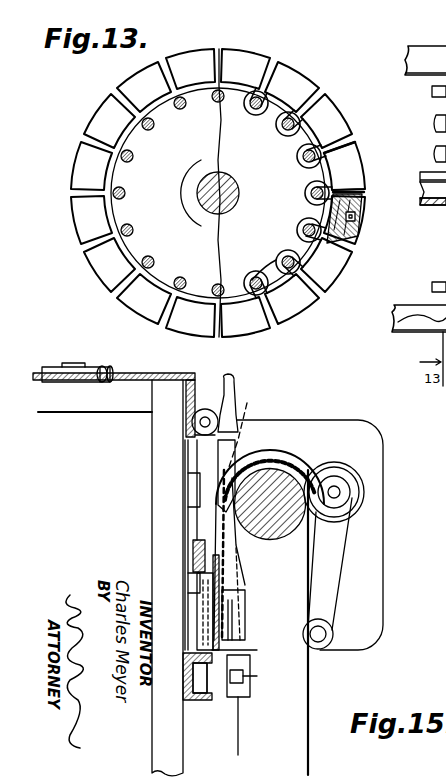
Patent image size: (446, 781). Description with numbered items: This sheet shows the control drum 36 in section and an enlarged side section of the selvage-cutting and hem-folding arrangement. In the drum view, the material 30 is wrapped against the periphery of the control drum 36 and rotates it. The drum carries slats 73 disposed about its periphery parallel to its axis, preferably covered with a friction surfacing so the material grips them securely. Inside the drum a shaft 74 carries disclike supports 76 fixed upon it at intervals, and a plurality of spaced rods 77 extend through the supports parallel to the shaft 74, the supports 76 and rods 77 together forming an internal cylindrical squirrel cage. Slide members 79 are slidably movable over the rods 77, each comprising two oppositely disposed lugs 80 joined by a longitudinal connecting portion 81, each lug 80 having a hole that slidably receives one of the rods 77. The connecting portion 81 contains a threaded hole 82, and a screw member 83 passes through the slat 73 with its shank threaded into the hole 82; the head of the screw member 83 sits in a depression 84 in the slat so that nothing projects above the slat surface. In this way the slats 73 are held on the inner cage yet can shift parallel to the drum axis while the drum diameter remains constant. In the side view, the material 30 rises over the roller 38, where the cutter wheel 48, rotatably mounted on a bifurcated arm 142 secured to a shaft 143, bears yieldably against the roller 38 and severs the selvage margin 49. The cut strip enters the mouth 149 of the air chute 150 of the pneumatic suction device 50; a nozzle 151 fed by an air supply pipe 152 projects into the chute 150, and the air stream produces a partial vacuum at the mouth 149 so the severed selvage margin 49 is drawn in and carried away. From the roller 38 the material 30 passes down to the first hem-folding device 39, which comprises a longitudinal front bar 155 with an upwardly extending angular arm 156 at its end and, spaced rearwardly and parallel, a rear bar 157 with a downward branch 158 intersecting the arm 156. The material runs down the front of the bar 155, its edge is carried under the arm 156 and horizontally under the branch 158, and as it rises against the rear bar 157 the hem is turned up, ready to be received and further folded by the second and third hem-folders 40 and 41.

In FIG. 13, the control drum 36 is at (302, 66).
In FIG. 13, the slats 73 is at (232, 60).
In FIG. 13, the shaft 74 is at (197, 214).
In FIG. 13, the disclike supports 76 is at (278, 150).
In FIG. 13, the rods 77 is at (262, 284).
In FIG. 13, the slide members 79 is at (304, 214).
In FIG. 13, the lugs 80 is at (300, 255).
In FIG. 13, the connecting portion 81 is at (340, 141).
In FIG. 13, the threaded hole 82 is at (348, 172).
In FIG. 13, the screw member 83 is at (356, 217).
In FIG. 13, the depression 84 is at (356, 193).
In FIG. 15, the material 30 is at (200, 375).
In FIG. 15, the roller 38 is at (284, 540).
In FIG. 15, the first hem-folding device 39 is at (192, 636).
In FIG. 15, the second hem-folder 40 is at (192, 452).
In FIG. 15, the third hem-folder 41 is at (90, 371).
In FIG. 15, the cutter wheel 48 is at (350, 490).
In FIG. 15, the selvage margin 49 is at (292, 462).
In FIG. 15, the pneumatic suction device 50 is at (272, 450).
In FIG. 15, the bifurcated arm 142 is at (334, 570).
In FIG. 15, the shaft 143 is at (336, 652).
In FIG. 15, the mouth 149 is at (348, 462).
In FIG. 15, the air chute 150 is at (235, 614).
In FIG. 15, the nozzle 151 is at (238, 436).
In FIG. 15, the air supply pipe 152 is at (233, 386).
In FIG. 15, the bar 155 is at (226, 652).
In FIG. 15, the arm 156 is at (218, 604).
In FIG. 15, the rear bar 157 is at (196, 556).
In FIG. 15, the branch 158 is at (222, 637).